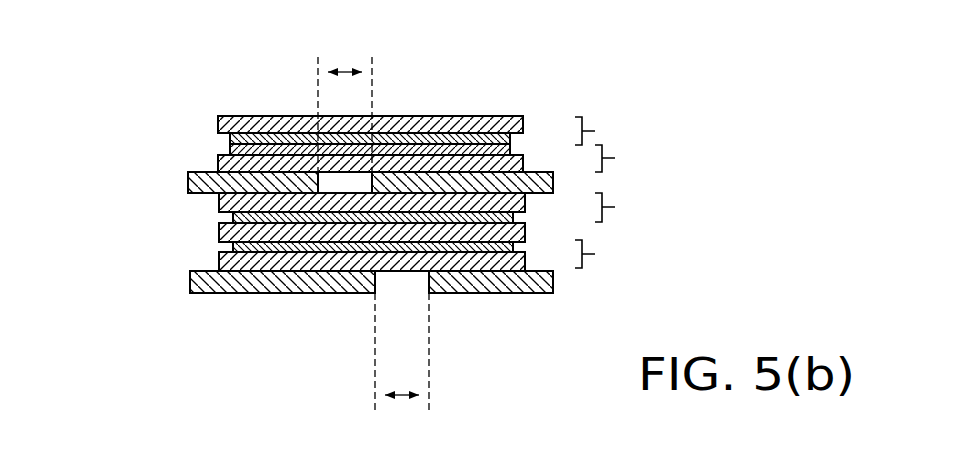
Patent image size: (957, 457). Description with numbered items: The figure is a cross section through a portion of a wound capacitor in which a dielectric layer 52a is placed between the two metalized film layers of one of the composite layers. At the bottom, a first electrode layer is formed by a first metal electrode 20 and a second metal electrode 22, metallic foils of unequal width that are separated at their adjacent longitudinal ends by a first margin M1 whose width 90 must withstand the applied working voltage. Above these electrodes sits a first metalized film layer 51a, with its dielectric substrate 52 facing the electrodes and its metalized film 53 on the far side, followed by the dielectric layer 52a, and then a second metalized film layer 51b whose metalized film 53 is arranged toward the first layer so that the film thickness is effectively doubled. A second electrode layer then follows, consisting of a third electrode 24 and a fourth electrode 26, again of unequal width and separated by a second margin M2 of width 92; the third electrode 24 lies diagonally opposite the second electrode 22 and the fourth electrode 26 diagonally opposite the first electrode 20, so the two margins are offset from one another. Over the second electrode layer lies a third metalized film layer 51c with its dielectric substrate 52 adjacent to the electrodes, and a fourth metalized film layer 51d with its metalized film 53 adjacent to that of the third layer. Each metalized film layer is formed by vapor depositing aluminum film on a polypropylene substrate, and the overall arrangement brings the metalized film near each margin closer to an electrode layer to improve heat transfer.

The first metal electrode 20 is at (190, 282).
The second metal electrode 22 is at (553, 283).
The third electrode 24 is at (188, 178).
The fourth electrode 26 is at (553, 183).
The dielectric substrate 52 is at (218, 116).
The dielectric layer 52a is at (525, 228).
The metalized film 53 is at (230, 150).
The first metalized film layer 51a is at (610, 253).
The second metalized film layer 51b is at (631, 206).
The third metalized film layer 51c is at (629, 157).
The fourth metalized film layer 51d is at (611, 130).
The width of the first margin 90 is at (402, 395).
The width of the second margin 92 is at (345, 72).
The first margin M1 is at (400, 285).
The second margin M2 is at (345, 182).